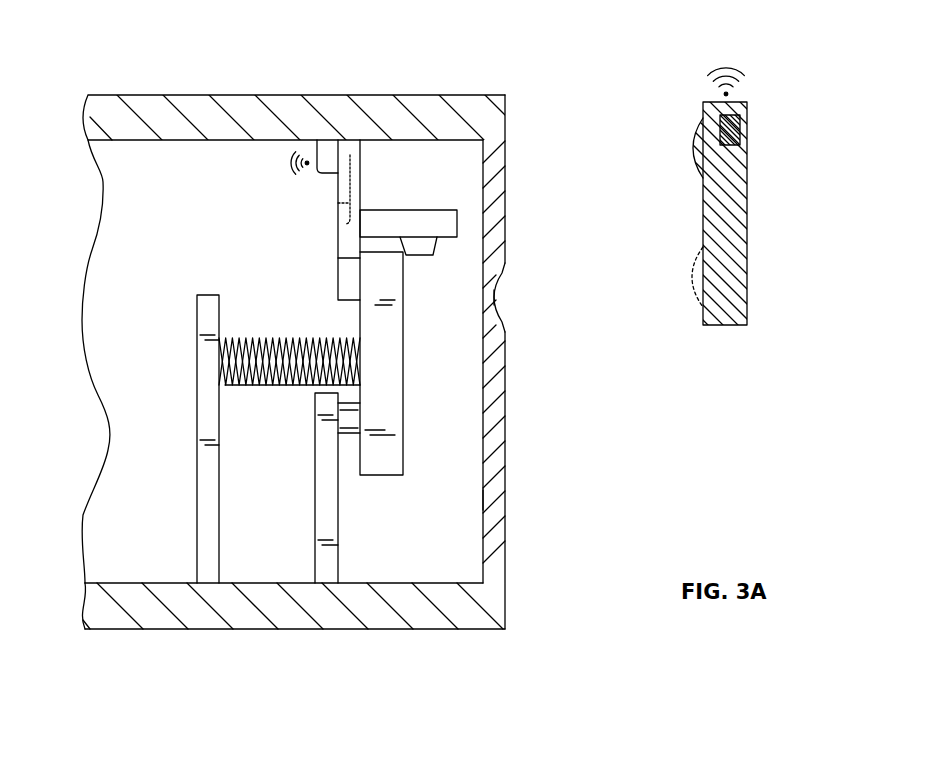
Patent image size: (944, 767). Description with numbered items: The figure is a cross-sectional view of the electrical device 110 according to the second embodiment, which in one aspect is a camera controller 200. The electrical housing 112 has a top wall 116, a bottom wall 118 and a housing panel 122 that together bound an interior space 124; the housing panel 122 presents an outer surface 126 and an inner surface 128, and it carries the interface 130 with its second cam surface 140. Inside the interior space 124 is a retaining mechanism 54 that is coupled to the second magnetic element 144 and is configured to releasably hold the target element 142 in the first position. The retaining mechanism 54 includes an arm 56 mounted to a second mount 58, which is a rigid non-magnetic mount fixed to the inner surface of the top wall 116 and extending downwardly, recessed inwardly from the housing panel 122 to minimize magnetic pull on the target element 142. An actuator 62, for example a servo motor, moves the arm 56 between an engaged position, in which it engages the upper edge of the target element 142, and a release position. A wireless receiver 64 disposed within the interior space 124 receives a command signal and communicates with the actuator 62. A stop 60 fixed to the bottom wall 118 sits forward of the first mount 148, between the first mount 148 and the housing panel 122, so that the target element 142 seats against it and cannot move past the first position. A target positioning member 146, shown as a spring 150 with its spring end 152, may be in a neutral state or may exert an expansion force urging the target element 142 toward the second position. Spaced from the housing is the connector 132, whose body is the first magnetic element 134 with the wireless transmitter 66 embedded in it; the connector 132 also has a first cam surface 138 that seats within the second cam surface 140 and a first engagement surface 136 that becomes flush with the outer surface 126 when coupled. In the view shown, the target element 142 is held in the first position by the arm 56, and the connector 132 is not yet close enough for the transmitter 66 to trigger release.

The retaining mechanism 54 is at (422, 172).
The arm 56 is at (422, 257).
The second mount 58 is at (350, 258).
The stop 60 is at (340, 530).
The actuator 62 is at (418, 222).
The receiver 64 is at (325, 140).
The wireless transmitter 66 is at (730, 147).
The electrical device 110 is at (575, 115).
The camera controller 200 is at (702, 42).
The electrical housing 112 is at (540, 103).
The top wall 116 is at (342, 95).
The bottom wall 118 is at (275, 630).
The housing panel 122 is at (540, 171).
The interior space 124 is at (150, 328).
The outer surface 126 is at (503, 385).
The inner surface 128 is at (468, 500).
The interface 130 is at (537, 262).
The connector 132 is at (736, 226).
The first magnetic element 134 is at (725, 283).
The first engagement surface 136 is at (693, 265).
The first cam surface 138 is at (693, 147).
The second cam surface 140 is at (500, 298).
The target element 142 is at (320, 218).
The second magnetic element 144 is at (388, 350).
The target positioning member 146 is at (278, 477).
The first mount 148 is at (197, 432).
The spring 150 is at (281, 338).
The spring end 152 is at (247, 388).